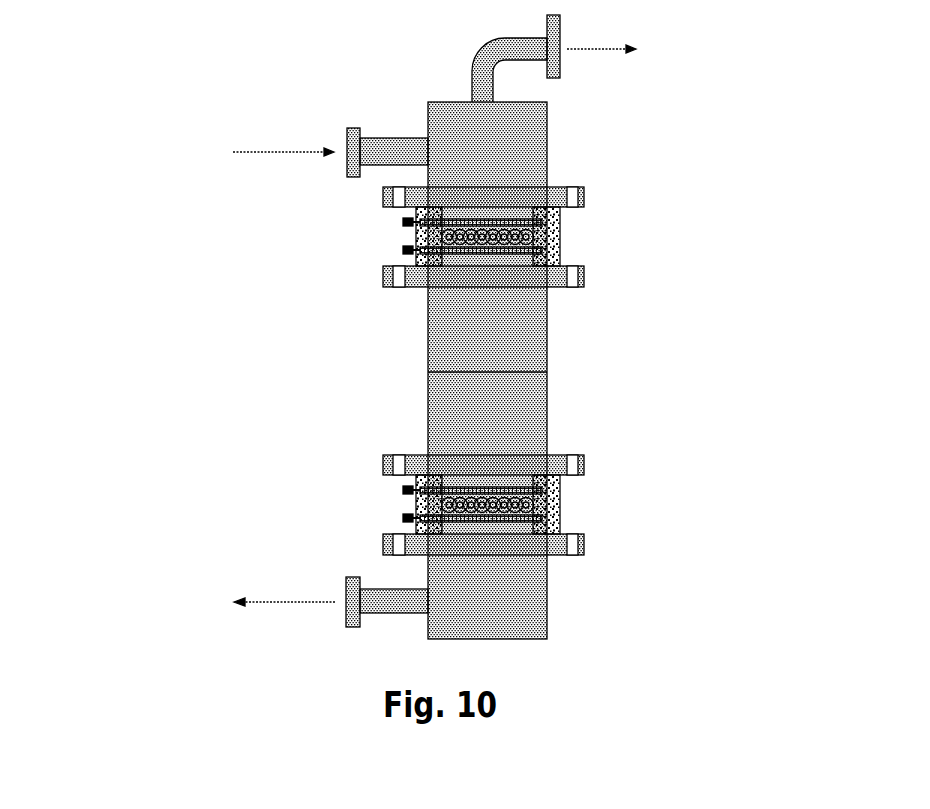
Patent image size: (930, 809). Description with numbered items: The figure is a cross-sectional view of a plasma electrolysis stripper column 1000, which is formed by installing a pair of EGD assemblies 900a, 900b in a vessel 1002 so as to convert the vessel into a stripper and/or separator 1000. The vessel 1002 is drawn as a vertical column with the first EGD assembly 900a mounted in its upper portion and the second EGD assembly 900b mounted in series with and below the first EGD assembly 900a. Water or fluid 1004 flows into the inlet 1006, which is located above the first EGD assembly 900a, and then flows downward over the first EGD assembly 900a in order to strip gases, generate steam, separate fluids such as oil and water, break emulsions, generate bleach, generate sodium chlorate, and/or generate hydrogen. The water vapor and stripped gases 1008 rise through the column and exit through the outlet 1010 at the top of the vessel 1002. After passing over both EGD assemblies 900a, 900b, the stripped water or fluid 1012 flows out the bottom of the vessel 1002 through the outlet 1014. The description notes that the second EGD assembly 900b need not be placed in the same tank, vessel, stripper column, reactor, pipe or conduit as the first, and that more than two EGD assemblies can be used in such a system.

The plasma electrolysis stripper column 1000 is at (282, 72).
The vessel 1002 is at (547, 328).
The water or fluid 1004 is at (203, 165).
The inlet 1006 is at (355, 177).
The water vapor and stripped gases 1008 is at (693, 65).
The outlet 1010 is at (555, 77).
The stripped water or fluid 1012 is at (176, 587).
The outlet 1014 is at (350, 620).
The first EGD assembly 900a is at (562, 237).
The second EGD assembly 900b is at (563, 504).